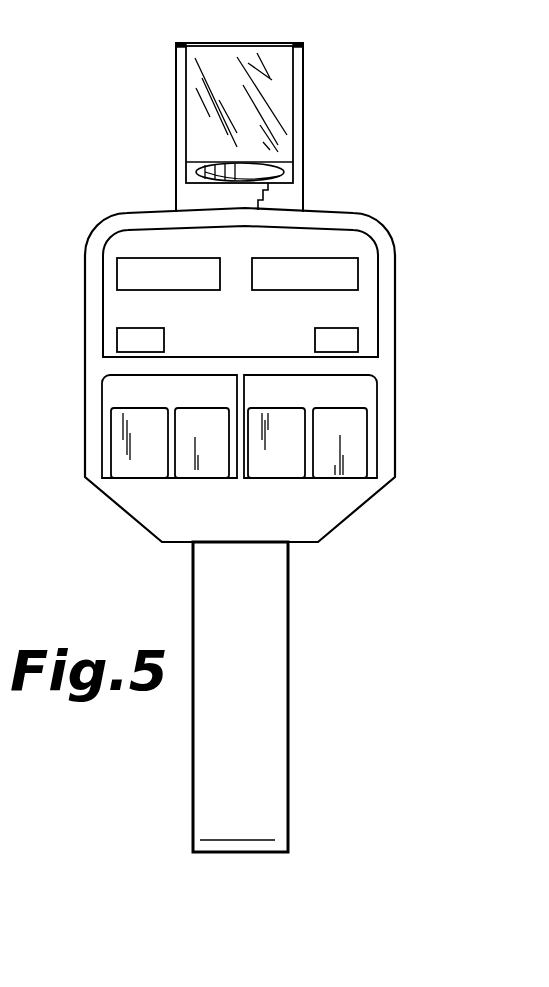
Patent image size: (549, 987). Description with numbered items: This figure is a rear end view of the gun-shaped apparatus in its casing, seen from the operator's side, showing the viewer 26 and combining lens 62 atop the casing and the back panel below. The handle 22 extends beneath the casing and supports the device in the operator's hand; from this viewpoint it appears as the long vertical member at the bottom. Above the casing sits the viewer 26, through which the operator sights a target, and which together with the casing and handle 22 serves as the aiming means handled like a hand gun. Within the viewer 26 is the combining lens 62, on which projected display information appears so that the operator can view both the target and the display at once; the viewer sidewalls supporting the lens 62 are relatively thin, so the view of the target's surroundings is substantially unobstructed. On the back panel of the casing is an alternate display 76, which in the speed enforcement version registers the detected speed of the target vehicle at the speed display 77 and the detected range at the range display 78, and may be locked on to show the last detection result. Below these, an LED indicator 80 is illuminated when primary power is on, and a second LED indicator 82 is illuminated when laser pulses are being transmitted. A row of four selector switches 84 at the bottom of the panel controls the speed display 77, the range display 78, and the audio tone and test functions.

The handle 22 is at (210, 581).
The viewer 26 is at (168, 133).
The combining lens 62 is at (243, 62).
The alternate display 76 is at (338, 253).
The speed display 77 is at (157, 276).
The range display 78 is at (318, 270).
The LED indicator 80 is at (142, 340).
The LED indicator 82 is at (334, 338).
The selector switches 84 is at (140, 465).